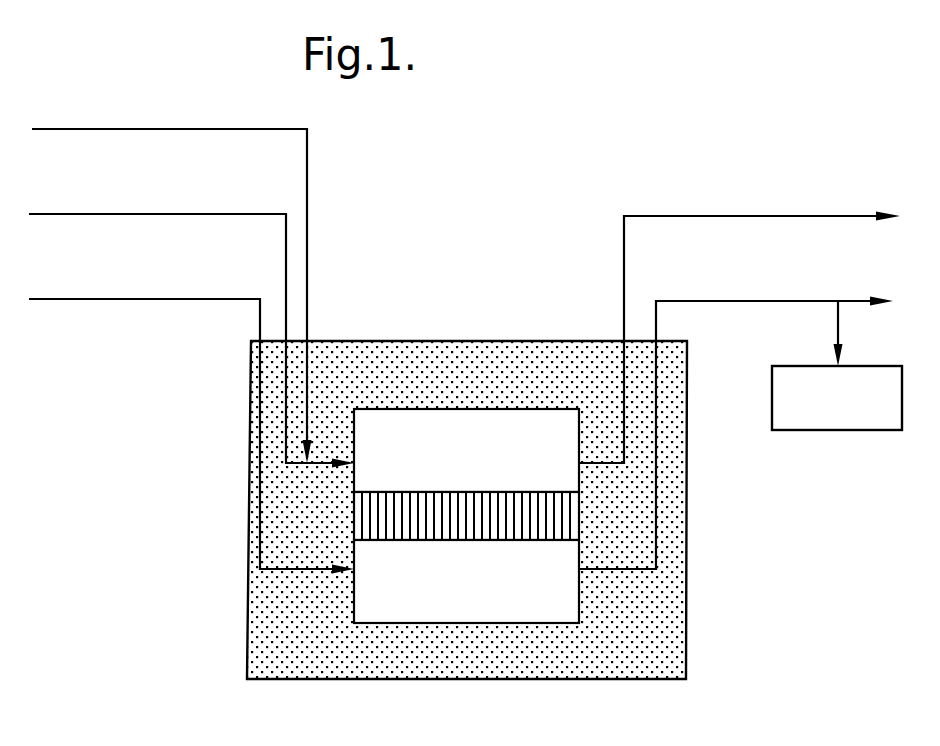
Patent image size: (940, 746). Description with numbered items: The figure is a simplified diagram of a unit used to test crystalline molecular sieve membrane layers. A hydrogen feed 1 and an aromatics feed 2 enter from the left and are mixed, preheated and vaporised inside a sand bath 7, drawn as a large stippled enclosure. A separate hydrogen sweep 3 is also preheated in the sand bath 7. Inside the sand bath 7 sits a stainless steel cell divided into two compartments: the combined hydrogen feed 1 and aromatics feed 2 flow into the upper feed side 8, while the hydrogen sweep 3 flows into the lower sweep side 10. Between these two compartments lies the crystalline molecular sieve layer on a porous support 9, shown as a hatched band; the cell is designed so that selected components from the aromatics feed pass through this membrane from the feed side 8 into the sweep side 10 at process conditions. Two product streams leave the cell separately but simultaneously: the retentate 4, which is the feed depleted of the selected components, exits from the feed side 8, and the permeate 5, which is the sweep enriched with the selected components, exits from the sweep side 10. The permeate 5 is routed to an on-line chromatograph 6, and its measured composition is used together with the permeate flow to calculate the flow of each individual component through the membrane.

The hydrogen feed 1 is at (129, 129).
The aromatics feed 2 is at (140, 214).
The hydrogen sweep 3 is at (141, 299).
The retentate 4 is at (856, 216).
The permeate 5 is at (856, 301).
The on-line chromatograph 6 is at (845, 416).
The sand bath 7 is at (467, 655).
The feed side 8 is at (486, 463).
The crystalline molecular sieve layer on a porous support 9 is at (470, 516).
The sweep side 10 is at (548, 607).